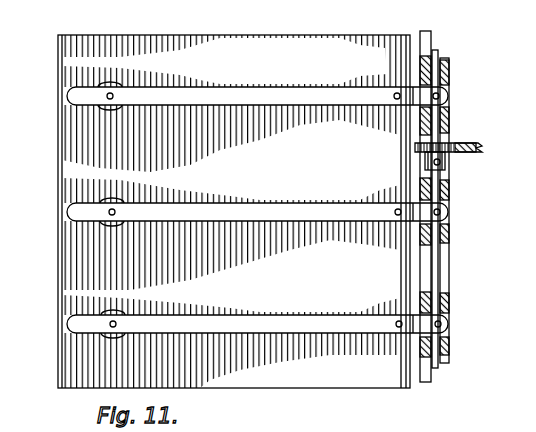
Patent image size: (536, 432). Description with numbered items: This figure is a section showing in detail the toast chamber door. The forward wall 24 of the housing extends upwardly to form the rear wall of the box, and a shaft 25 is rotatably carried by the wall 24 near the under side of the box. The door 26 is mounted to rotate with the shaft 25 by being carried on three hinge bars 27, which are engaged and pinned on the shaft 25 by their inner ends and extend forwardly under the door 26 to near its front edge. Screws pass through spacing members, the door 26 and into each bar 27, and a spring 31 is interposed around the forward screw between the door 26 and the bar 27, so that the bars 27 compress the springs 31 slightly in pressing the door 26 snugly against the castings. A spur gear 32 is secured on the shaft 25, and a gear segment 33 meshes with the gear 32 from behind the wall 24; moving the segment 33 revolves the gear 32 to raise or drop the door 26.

The forward wall 24 is at (431, 44).
The shaft 25 is at (437, 275).
The door 26 is at (291, 24).
The hinge bars 27 is at (303, 79).
The spring 31 is at (108, 310).
The spur gear 32 is at (452, 143).
The gear segment 33 is at (470, 152).